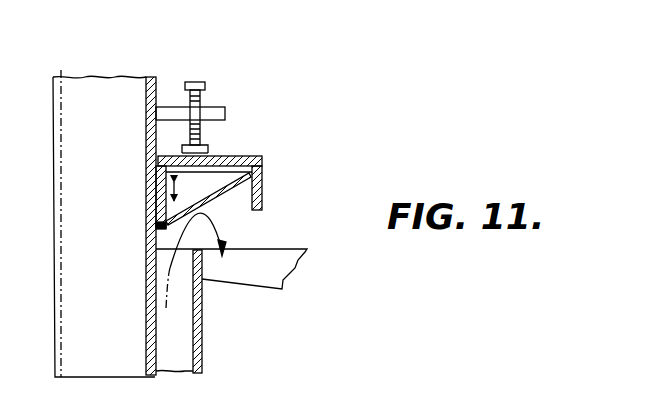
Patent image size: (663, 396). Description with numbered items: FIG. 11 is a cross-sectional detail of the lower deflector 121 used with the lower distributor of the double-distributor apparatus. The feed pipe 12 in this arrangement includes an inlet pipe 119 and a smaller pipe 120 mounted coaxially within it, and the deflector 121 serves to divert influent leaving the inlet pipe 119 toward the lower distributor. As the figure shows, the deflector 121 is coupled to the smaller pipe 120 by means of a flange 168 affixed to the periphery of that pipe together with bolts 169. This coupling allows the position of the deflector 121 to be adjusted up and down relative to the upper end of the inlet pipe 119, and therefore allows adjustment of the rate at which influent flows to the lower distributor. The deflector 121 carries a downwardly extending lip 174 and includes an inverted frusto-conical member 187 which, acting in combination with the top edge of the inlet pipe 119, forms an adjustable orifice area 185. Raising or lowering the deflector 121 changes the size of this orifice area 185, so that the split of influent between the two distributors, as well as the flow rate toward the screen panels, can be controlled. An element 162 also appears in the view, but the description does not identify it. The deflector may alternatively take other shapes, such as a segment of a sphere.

The pipe 120 is at (134, 88).
The bolts 169 is at (205, 85).
The flange 168 is at (225, 113).
The deflector 121 is at (246, 157).
The downwardly extending lip 174 is at (250, 180).
The inverted frusto-conical member 187 is at (261, 199).
The adjustable orifice area 185 is at (173, 240).
The plate 162 is at (287, 255).
The inlet pipe 119 is at (203, 316).
The feed pipe 12 is at (210, 352).